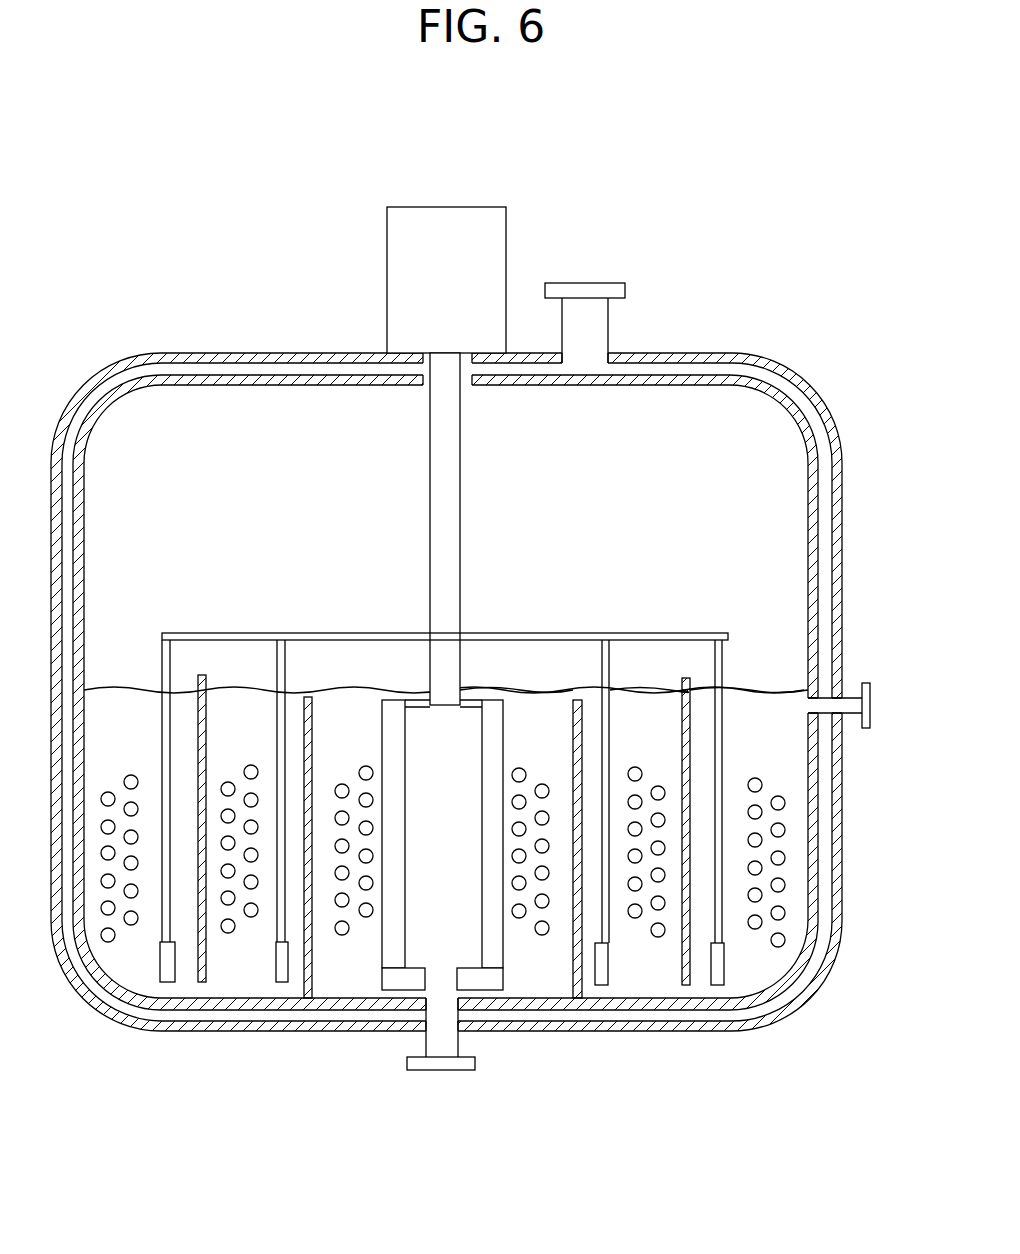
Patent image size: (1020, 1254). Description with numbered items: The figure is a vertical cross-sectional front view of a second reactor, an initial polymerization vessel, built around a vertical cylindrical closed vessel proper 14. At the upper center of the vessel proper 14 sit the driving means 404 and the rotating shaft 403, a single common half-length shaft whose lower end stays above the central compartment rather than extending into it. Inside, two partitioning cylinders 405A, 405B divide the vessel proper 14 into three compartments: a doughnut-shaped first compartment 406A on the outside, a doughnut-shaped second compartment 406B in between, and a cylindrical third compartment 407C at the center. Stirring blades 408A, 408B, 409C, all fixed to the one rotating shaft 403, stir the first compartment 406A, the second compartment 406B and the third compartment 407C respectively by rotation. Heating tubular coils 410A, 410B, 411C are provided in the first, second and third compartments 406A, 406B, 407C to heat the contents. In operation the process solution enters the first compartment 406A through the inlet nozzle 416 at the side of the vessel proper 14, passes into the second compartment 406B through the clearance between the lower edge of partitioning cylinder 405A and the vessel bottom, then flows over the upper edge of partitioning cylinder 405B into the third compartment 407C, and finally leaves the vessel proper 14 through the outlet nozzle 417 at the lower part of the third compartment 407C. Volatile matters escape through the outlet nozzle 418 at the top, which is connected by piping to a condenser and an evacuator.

The vessel proper 14 is at (693, 353).
The rotating shaft 403 is at (462, 485).
The driving means 404 is at (492, 207).
The partitioning cylinder 405A is at (690, 715).
The partitioning cylinder 405B is at (573, 760).
The first compartment 406A is at (758, 712).
The second compartment 406B is at (632, 705).
The third compartment 407C is at (508, 700).
The stirring blade 408A is at (724, 935).
The stirring blade 408B is at (608, 935).
The stirring blade 409C is at (406, 908).
The heating tubular coil 410A is at (755, 778).
The heating tubular coil 410B is at (636, 767).
The heating tubular coil 411C is at (543, 936).
The process solution inlet nozzle 416 is at (866, 683).
The process solution outlet nozzle 417 is at (427, 1072).
The outlet nozzle for volatile matters 418 is at (600, 283).